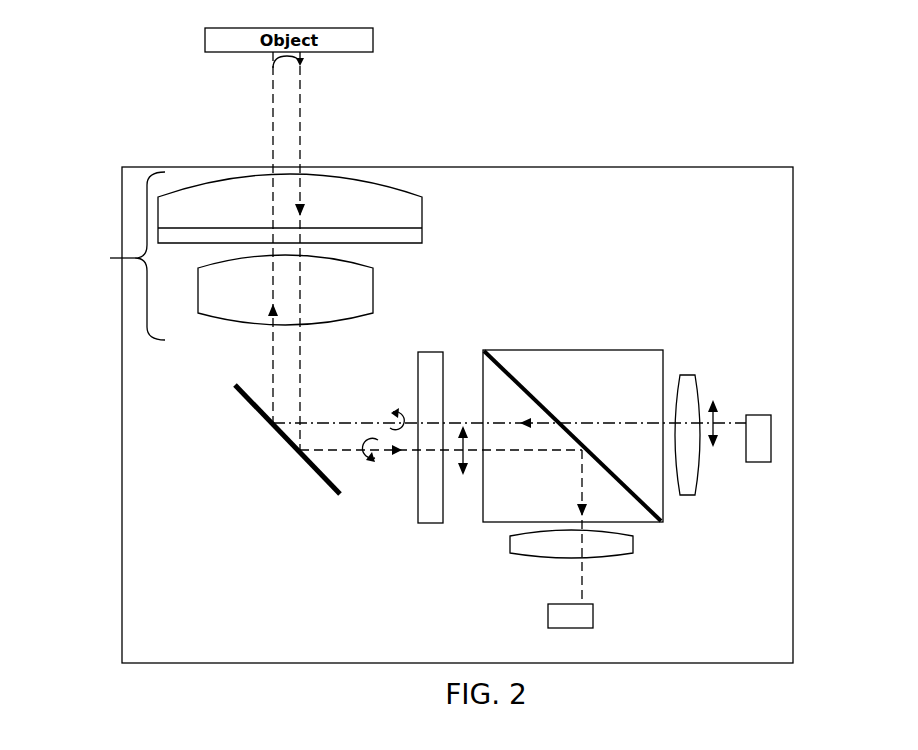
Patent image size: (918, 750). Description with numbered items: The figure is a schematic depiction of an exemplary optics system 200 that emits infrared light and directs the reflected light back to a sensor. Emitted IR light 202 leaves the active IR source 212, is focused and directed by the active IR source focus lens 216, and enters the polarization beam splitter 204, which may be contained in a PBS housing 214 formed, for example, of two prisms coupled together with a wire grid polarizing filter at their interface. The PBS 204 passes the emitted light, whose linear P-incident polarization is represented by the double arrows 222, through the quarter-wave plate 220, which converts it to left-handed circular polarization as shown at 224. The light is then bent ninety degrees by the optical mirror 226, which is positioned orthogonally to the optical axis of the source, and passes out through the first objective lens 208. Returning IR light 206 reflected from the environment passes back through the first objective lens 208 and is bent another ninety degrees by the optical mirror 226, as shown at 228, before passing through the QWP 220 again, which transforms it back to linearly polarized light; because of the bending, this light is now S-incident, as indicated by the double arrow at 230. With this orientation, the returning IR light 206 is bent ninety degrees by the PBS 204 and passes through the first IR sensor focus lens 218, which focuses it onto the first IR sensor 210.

The optics system 200 is at (533, 127).
The emitted IR light 202 is at (273, 372).
The polarization beam splitter 204 is at (500, 360).
The returning IR light 206 is at (300, 135).
The first objective lens 208 is at (118, 258).
The first IR sensor 210 is at (548, 612).
The active IR source 212 is at (771, 442).
The PBS housing 214 is at (617, 350).
The active IR source focus lens 216 is at (688, 375).
The first IR sensor focus lens 218 is at (532, 553).
The quarter-wave plate 220 is at (418, 495).
The double arrows indicating linear polarization 222 is at (716, 447).
The left-handed circular polarization 224 is at (395, 406).
The optical mirror 226 is at (258, 418).
The bent circularly polarized returning light 228 is at (366, 468).
The double arrow indicating S-incident linear polarization 230 is at (463, 476).